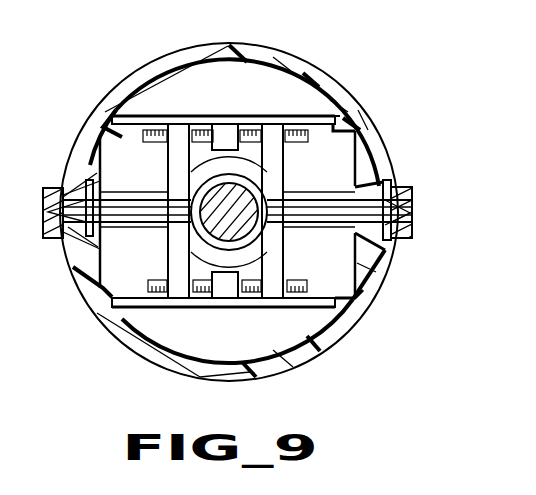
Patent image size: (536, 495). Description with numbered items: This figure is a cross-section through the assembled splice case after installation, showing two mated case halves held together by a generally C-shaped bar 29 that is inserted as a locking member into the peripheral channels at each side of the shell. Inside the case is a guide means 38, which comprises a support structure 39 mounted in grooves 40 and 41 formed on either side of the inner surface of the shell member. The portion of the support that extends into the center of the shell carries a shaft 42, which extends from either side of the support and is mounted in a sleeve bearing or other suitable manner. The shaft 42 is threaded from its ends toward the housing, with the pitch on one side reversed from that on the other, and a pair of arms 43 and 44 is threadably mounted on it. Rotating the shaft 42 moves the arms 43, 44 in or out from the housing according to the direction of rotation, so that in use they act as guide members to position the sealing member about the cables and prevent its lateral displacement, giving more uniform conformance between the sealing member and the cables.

The "C" shaped bar 29 is at (414, 213).
The guide means 38 is at (183, 108).
The support structure 39 is at (290, 112).
The groove 40 is at (125, 108).
The groove 41 is at (335, 111).
The shaft 42 is at (312, 138).
The arm 43 is at (177, 183).
The arm 44 is at (282, 182).